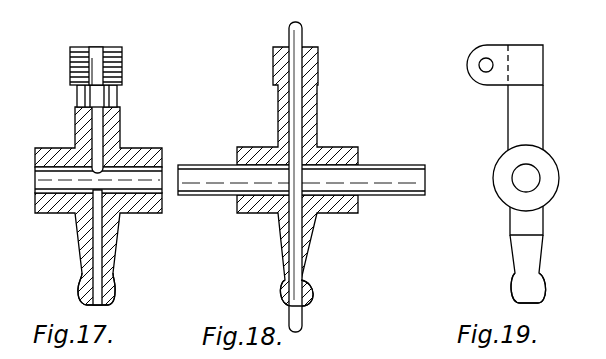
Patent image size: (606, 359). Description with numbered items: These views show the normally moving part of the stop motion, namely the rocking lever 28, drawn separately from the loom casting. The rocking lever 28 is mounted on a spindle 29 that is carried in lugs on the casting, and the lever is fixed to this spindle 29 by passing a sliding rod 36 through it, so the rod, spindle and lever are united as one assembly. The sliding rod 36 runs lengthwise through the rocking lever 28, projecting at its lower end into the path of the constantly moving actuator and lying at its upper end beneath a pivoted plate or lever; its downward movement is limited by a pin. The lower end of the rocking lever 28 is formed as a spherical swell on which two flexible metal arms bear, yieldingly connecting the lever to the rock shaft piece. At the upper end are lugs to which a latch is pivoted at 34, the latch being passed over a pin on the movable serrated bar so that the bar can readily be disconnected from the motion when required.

In FIG. 17, the rocking lever 28 is at (118, 126).
In FIG. 18, the rocking lever 28 is at (315, 116).
In FIG. 19, the rocking lever 28 is at (522, 122).
In FIG. 18, the spindle 29 is at (400, 195).
In FIG. 19, the pivot 34 is at (490, 58).
In FIG. 18, the sliding rod 36 is at (303, 33).